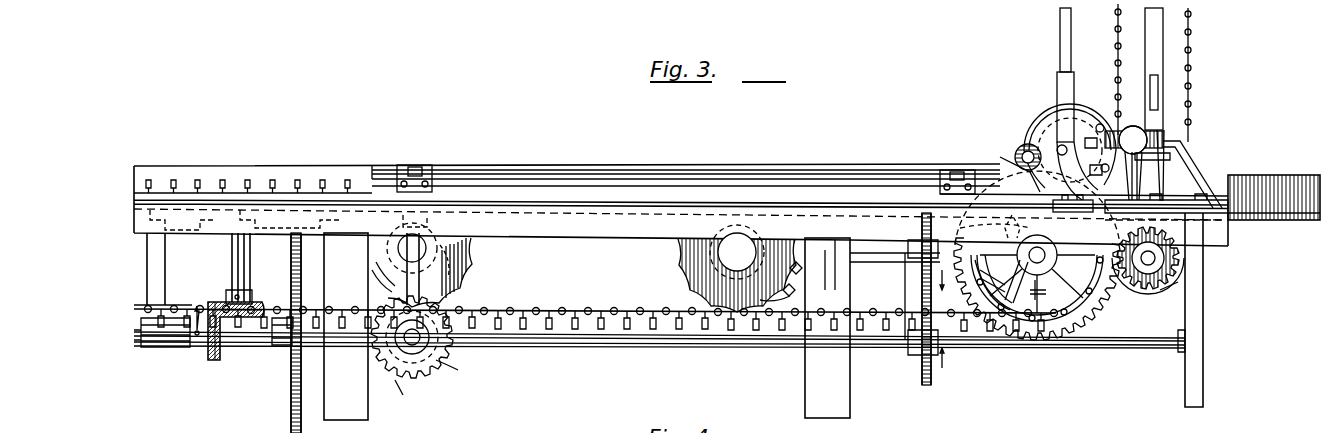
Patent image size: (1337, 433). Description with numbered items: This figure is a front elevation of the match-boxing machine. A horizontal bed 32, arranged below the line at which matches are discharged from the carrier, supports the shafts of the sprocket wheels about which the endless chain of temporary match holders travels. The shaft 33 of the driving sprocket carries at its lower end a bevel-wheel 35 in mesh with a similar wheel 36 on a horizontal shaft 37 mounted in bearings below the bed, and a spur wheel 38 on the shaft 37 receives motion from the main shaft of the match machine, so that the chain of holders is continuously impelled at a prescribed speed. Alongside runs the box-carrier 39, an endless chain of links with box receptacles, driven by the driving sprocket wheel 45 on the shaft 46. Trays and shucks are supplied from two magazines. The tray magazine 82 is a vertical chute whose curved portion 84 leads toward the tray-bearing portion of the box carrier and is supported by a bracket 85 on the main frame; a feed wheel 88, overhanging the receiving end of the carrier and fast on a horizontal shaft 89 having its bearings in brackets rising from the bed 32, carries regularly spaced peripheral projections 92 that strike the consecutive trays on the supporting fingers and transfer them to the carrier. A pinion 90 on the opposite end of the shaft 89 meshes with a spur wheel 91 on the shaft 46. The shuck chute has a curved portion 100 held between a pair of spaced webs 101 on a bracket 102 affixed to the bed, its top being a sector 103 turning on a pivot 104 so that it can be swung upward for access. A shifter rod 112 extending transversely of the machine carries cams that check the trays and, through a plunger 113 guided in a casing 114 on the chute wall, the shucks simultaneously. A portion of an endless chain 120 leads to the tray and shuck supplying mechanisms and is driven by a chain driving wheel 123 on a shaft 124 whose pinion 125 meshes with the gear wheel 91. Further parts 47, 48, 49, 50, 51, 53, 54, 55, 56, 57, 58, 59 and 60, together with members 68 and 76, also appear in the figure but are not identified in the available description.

The horizontal bed 32 is at (313, 212).
The shaft 33 is at (235, 320).
The bevel-wheel 35 is at (245, 314).
The bevel wheel 36 is at (200, 352).
The horizontal shaft 37 is at (572, 346).
The spur wheel 38 is at (289, 398).
The box-carrier 39 is at (298, 184).
The driving sprocket wheel 45 is at (1060, 315).
The shaft 46 is at (1045, 260).
The pawl 47 is at (1035, 318).
The lever 48 is at (1012, 325).
The plate 49 is at (888, 258).
The rack 50 is at (925, 215).
The rack guide 51 is at (925, 388).
The chain 53 is at (547, 304).
The gear 54 is at (470, 264).
The shaft 55 is at (437, 244).
The sprocket 56 is at (480, 250).
The arm 57 is at (442, 362).
The gear 58 is at (413, 342).
The lever 59 is at (405, 365).
The plate 60 is at (367, 366).
The rail 68 is at (560, 192).
The rail 76 is at (745, 174).
The tray magazine 82 is at (1160, 133).
The curved portion 84 is at (1162, 166).
The bracket 85 is at (1208, 170).
The feed wheel 88 is at (1070, 125).
The horizontal shaft 89 is at (1066, 150).
The pinion 90 is at (1052, 152).
The spur wheel 91 is at (1105, 316).
The peripheral projections 92 is at (1100, 112).
The curved portion 100 is at (1016, 153).
The spaced webs 101 is at (1162, 140).
The bracket 102 is at (1020, 223).
The sector 103 is at (955, 168).
The pivot 104 is at (1012, 150).
The shifter rod 112 is at (1168, 143).
The plunger 113 is at (1152, 112).
The casing 114 is at (1116, 118).
The endless chain 120 is at (1192, 47).
The chain driving wheel 123 is at (1178, 282).
The shaft 124 is at (1180, 268).
The pinion 125 is at (1184, 258).